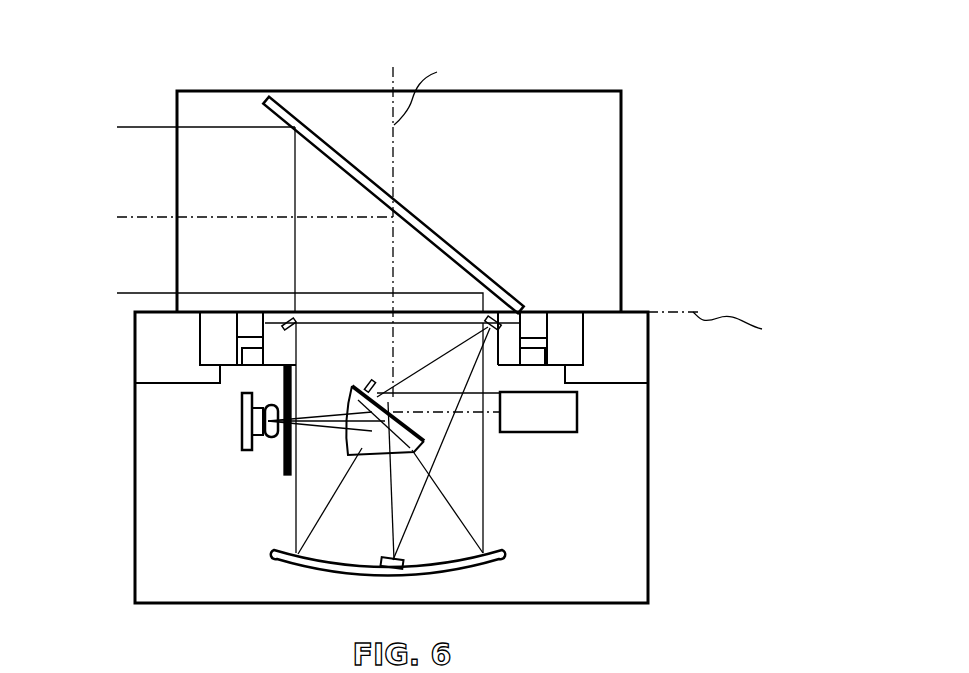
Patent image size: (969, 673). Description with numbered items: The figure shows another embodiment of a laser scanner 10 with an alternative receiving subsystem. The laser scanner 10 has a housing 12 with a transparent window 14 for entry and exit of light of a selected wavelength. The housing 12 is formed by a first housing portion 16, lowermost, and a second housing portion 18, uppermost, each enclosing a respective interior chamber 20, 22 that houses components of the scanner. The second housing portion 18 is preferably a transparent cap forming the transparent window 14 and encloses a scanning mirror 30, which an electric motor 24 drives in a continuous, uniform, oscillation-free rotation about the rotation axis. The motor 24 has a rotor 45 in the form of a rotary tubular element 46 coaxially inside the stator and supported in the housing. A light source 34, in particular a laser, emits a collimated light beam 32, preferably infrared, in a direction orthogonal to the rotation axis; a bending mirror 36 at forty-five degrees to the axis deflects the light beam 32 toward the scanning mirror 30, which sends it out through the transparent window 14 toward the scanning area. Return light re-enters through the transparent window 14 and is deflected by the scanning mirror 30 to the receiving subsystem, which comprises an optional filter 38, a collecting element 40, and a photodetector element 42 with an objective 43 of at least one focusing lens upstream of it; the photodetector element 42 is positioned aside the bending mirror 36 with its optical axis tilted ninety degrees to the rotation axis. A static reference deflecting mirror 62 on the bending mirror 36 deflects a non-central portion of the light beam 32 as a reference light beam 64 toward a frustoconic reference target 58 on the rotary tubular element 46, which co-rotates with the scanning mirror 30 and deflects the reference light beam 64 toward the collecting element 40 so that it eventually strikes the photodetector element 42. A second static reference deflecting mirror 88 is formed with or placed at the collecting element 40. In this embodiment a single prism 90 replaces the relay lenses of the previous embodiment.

The laser scanner 10 is at (106, 76).
The housing 12 is at (682, 290).
The transparent window 14 is at (624, 173).
The first housing portion 16 is at (650, 502).
The second housing portion 18 is at (566, 88).
The interior chamber 20 is at (604, 580).
The interior chamber 22 is at (578, 130).
The electric motor 24 is at (612, 398).
The scanning mirror 30 is at (435, 222).
The light beam 32 is at (230, 217).
The light source 34 is at (578, 413).
The bending mirror 36 is at (420, 440).
The filter 38 is at (283, 468).
The collecting element 40 is at (300, 563).
The photodetector element 42 is at (257, 420).
The objective 43 is at (273, 437).
The rotor 45 is at (512, 343).
The rotary tubular element 46 is at (540, 338).
The reference target 58 is at (493, 313).
The static reference deflecting mirror 62 is at (370, 385).
The reference light beam 64 is at (407, 377).
The second static reference deflecting mirror 88 is at (405, 570).
The prism 90 is at (345, 455).